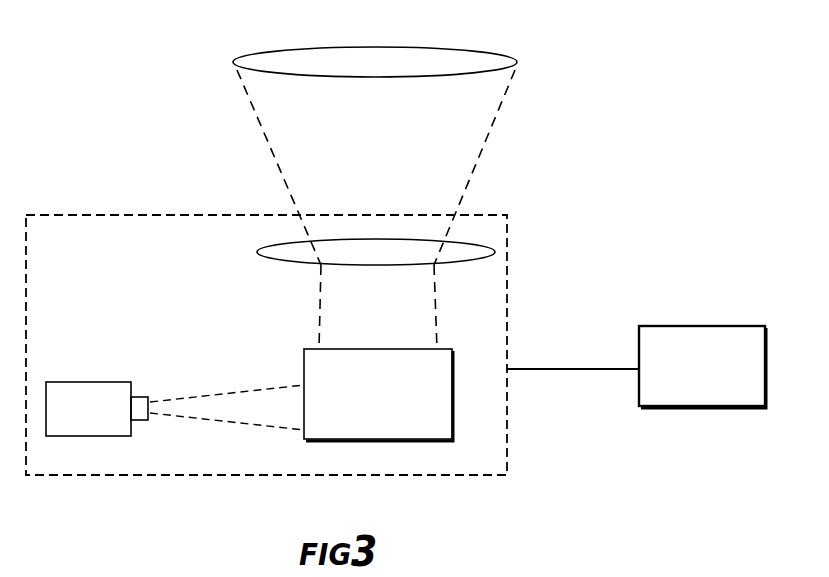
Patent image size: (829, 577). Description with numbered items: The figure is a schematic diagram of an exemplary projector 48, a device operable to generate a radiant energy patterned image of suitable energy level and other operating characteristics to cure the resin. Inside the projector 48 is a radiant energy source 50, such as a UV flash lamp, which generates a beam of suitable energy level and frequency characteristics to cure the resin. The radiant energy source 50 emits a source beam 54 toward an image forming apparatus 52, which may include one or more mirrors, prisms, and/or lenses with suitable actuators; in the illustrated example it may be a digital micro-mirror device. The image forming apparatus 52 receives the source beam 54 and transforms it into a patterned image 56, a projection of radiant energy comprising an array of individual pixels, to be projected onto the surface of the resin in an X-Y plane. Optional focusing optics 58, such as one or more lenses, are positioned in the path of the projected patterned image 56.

The projector 48 is at (109, 478).
The radiant energy source 50 is at (101, 421).
The image forming apparatus 52 is at (391, 407).
The source beam 54 is at (204, 396).
The patterned image 56 is at (448, 62).
The focusing optics 58 is at (468, 251).